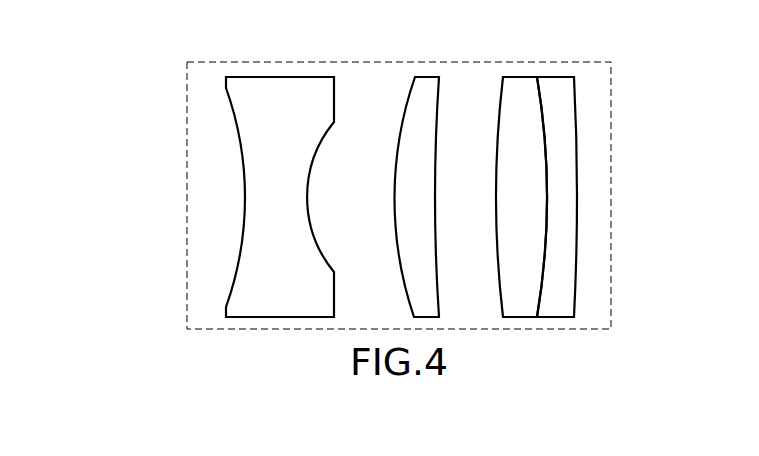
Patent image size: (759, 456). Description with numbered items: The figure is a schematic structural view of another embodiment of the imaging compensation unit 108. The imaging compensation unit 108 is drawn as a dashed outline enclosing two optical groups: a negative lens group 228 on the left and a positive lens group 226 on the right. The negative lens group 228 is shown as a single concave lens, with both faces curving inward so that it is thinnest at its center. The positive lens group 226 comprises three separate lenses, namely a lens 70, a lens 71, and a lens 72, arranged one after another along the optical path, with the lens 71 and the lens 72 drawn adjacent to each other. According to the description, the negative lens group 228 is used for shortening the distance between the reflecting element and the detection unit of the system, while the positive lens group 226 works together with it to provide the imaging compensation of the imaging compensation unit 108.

The imaging compensation unit 108 is at (611, 98).
The negative lens group 228 is at (273, 84).
The positive lens group 226 is at (590, 36).
The lens 70 is at (428, 80).
The lens 71 is at (513, 83).
The lens 72 is at (563, 80).